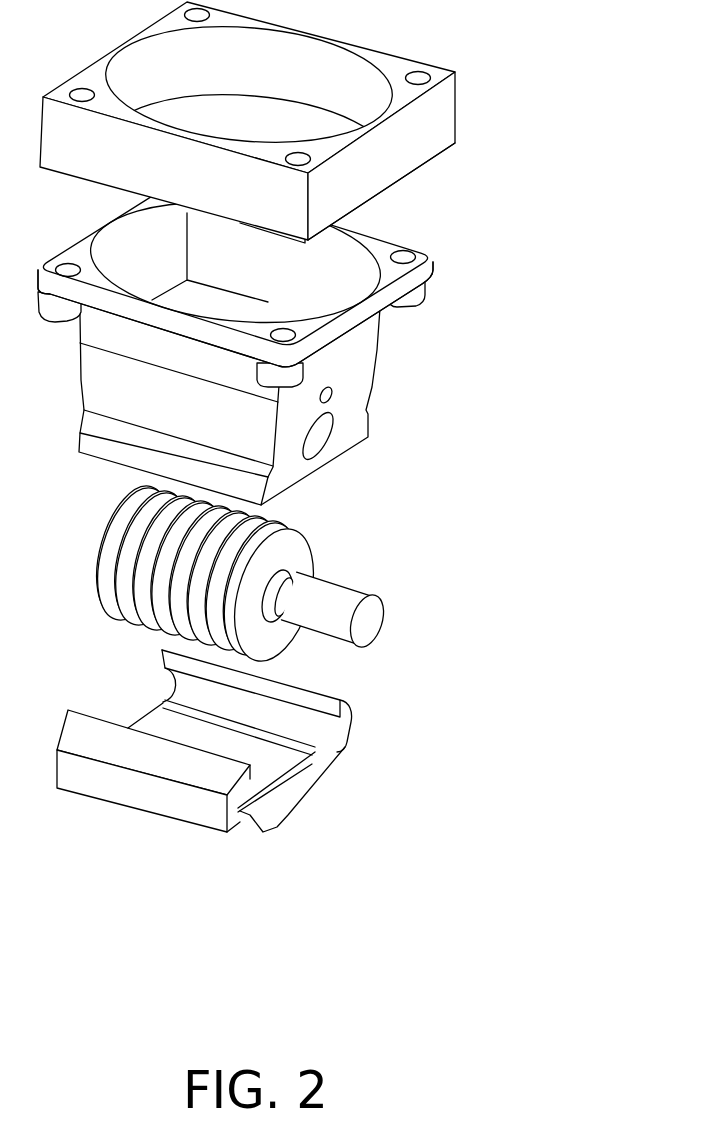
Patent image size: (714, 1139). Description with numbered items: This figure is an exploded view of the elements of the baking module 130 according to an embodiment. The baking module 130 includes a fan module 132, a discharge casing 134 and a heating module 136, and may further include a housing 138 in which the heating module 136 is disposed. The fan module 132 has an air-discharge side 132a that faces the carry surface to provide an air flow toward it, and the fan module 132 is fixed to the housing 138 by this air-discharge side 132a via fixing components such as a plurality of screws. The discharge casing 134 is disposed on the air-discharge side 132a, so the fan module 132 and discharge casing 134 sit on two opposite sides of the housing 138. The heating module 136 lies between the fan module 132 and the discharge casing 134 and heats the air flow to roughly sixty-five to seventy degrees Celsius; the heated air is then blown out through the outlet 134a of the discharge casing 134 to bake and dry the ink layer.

The baking module 130 is at (320, 483).
The fan module 132 is at (313, 121).
The air-discharge side 132a is at (403, 178).
The discharge casing 134 is at (263, 778).
The outlet 134a is at (275, 829).
The heating module 136 is at (293, 548).
The housing 138 is at (360, 380).